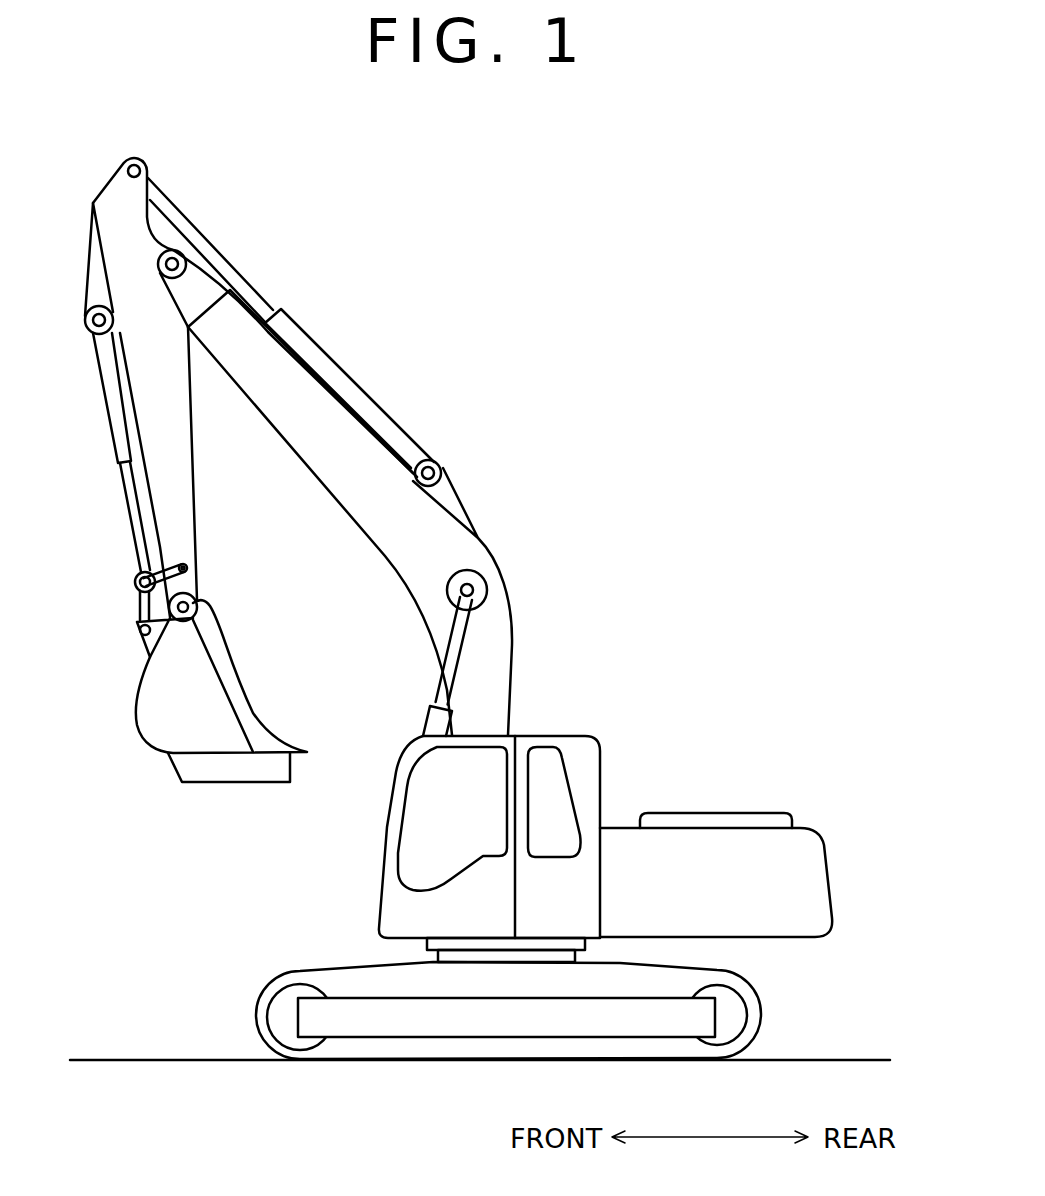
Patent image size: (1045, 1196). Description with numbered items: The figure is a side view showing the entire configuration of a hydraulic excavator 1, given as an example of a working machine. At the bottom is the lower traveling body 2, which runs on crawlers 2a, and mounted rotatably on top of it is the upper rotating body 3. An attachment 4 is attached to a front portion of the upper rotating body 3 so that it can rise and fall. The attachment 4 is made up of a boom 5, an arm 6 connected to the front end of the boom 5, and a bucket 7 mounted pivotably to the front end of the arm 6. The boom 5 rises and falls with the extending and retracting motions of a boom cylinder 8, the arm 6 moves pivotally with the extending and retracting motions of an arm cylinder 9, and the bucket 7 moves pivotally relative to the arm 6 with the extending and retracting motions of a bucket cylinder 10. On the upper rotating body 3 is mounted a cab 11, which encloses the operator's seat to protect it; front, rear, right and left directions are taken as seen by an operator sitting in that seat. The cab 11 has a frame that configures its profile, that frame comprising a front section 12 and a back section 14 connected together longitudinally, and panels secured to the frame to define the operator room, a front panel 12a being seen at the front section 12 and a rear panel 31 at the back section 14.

The hydraulic excavator 1 is at (690, 487).
The lower traveling body 2 is at (798, 1025).
The crawlers 2a is at (745, 990).
The upper rotating body 3 is at (834, 866).
The attachment 4 is at (431, 404).
The boom 5 is at (424, 545).
The arm 6 is at (175, 452).
The bucket 7 is at (228, 684).
The boom cylinder 8 is at (432, 727).
The arm cylinder 9 is at (338, 382).
The bucket cylinder 10 is at (98, 383).
The cab 11 is at (583, 708).
The front section 12 is at (405, 906).
The panel 12a is at (452, 819).
The back section 14 is at (583, 783).
The panel 31 is at (554, 802).